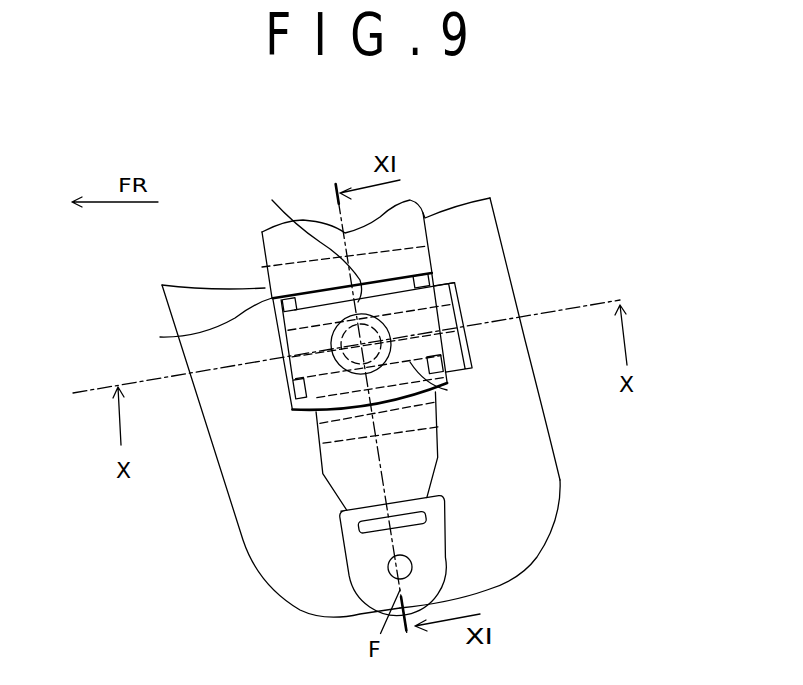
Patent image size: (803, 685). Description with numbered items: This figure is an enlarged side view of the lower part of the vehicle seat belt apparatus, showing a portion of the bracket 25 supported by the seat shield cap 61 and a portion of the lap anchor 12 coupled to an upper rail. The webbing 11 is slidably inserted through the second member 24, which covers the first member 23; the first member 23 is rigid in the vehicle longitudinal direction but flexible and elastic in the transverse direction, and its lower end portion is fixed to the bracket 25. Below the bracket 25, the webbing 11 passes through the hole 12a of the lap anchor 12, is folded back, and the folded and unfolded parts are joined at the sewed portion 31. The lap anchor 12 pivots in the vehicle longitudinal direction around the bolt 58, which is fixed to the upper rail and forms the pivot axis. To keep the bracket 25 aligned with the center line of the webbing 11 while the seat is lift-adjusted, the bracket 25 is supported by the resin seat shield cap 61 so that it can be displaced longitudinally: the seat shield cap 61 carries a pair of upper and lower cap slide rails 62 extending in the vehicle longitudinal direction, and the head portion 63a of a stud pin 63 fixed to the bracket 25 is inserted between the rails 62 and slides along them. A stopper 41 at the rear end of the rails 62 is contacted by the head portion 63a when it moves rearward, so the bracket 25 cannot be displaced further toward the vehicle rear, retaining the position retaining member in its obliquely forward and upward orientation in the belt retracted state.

The webbing 11 is at (347, 448).
The lap anchor 12 is at (433, 545).
The hole 12a is at (350, 527).
The first member 23 is at (200, 318).
The second member 24 is at (423, 217).
The bracket 25 is at (293, 410).
The sewed portion 31 is at (433, 423).
The stopper 41 is at (460, 300).
The bolt 58 is at (390, 568).
The seat shield cap 61 is at (513, 547).
The cap slide rails 62 is at (450, 392).
The stud pin 63 is at (342, 322).
The head portion 63a is at (306, 237).